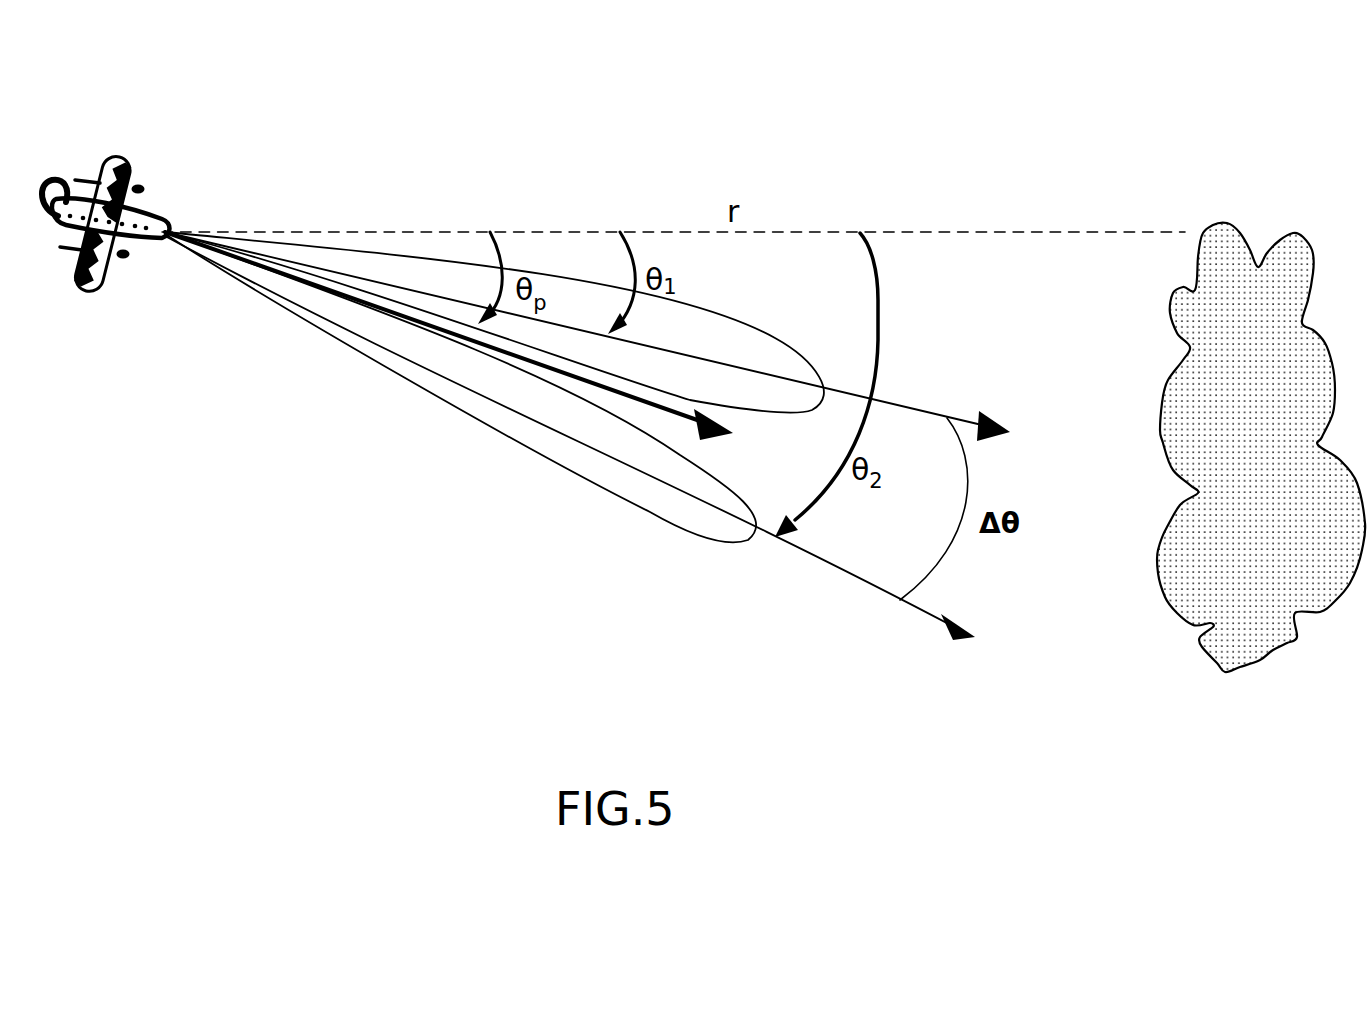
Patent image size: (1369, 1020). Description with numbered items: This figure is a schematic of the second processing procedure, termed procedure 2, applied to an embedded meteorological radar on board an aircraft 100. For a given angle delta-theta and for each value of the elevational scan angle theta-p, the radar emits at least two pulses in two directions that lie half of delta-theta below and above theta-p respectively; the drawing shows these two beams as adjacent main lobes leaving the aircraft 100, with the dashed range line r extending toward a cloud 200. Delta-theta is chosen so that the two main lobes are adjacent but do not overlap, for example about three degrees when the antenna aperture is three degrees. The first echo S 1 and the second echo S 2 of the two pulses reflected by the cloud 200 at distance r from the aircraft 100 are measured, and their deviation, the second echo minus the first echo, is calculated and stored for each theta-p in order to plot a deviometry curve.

The aircraft 100 is at (130, 157).
The cloud 200 is at (1237, 258).
The first beam S1 at pointing angle θp 1 is at (637, 344).
The second beam S2 at pointing angle θp 2 is at (622, 453).